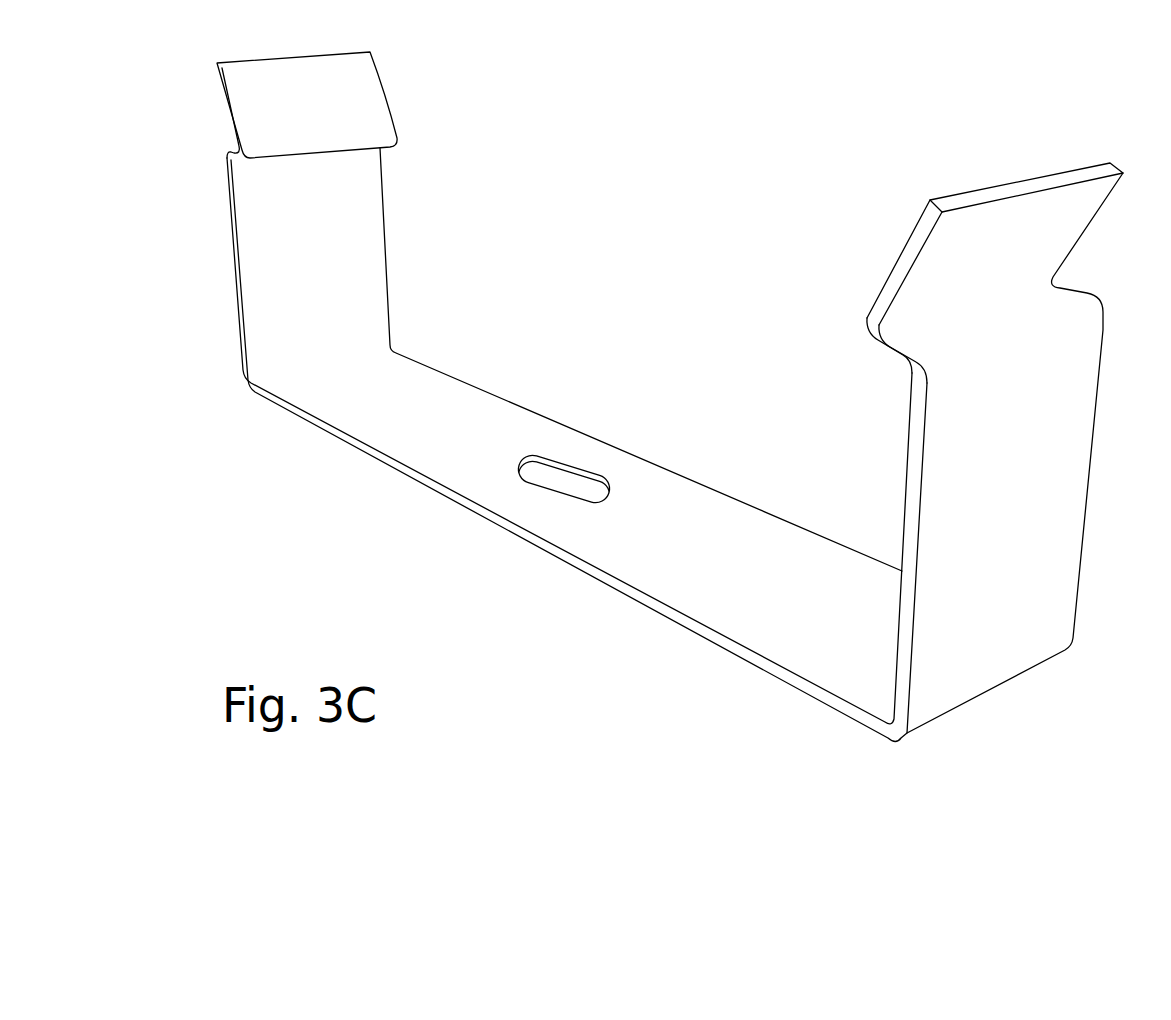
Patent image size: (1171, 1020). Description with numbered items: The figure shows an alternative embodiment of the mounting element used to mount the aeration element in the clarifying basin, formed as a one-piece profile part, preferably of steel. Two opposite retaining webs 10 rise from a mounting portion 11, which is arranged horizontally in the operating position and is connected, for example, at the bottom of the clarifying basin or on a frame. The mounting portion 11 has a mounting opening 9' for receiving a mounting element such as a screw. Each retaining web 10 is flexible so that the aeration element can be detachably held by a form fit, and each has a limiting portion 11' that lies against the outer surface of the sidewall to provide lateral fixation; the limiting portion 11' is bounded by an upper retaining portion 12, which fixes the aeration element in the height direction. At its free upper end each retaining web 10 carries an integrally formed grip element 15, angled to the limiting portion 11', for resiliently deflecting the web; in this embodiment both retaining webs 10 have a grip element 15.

The retaining web 10 is at (352, 255).
The mounting portion 11 is at (577, 445).
The limiting portion 11' is at (971, 453).
The upper retaining portion 12 is at (895, 348).
The grip element 15 is at (363, 95).
The mounting opening 9' is at (542, 518).